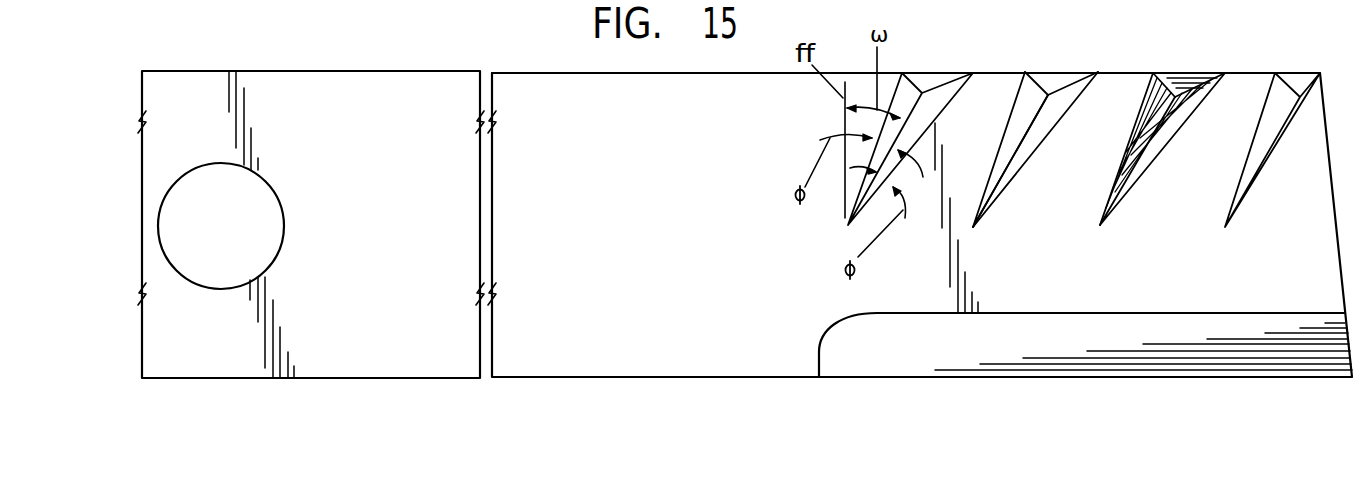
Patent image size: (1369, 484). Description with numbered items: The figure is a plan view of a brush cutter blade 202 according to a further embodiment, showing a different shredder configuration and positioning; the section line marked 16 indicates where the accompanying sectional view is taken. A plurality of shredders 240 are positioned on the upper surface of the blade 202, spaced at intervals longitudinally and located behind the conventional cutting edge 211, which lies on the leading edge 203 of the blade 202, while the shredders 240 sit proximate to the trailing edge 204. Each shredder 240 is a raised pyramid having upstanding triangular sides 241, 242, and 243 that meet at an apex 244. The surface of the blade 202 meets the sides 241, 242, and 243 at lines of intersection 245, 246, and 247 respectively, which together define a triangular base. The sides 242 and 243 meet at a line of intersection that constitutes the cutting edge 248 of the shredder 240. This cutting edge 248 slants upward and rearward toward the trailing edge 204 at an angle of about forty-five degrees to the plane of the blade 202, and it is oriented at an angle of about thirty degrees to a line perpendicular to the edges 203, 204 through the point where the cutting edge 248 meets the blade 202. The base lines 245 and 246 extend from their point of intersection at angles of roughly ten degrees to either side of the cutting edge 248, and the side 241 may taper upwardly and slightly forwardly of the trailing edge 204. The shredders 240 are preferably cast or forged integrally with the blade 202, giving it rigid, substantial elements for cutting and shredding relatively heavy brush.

The section line 16- 16 is at (1103, 62).
The brush cutter blade 202 is at (612, 388).
The leading edge 203 is at (787, 380).
The trailing edge 204 is at (555, 72).
The conventional cutting edge 211 is at (1240, 365).
The shredders 240 is at (1283, 68).
The triangular side 241 is at (1055, 80).
The triangular side 242 is at (1025, 107).
The triangular side 243 is at (1037, 133).
The apex 244 is at (1177, 100).
The line of intersection 245 is at (1175, 72).
The line of intersection 246 is at (1140, 112).
The line of intersection 247 is at (1140, 177).
The cutting edge 248 is at (1008, 165).